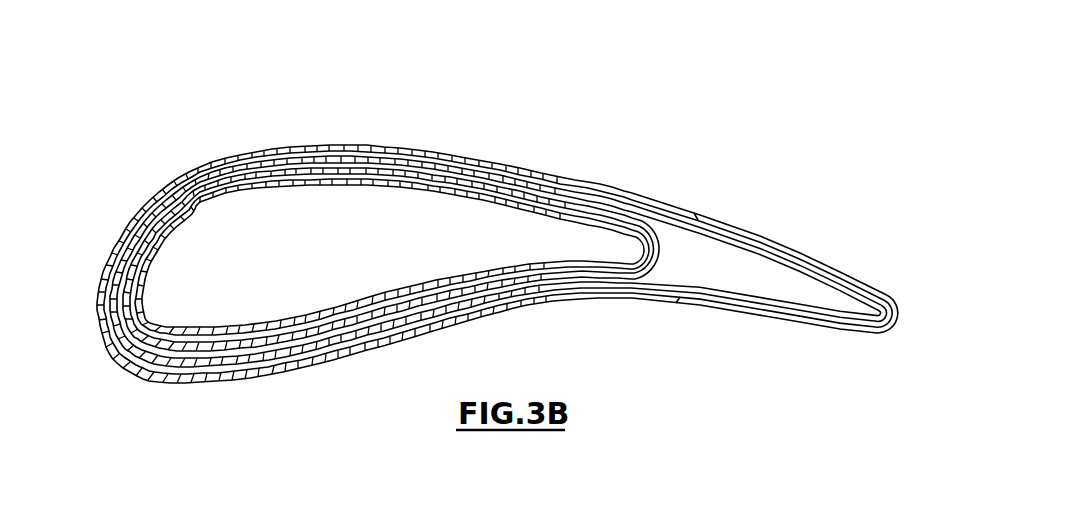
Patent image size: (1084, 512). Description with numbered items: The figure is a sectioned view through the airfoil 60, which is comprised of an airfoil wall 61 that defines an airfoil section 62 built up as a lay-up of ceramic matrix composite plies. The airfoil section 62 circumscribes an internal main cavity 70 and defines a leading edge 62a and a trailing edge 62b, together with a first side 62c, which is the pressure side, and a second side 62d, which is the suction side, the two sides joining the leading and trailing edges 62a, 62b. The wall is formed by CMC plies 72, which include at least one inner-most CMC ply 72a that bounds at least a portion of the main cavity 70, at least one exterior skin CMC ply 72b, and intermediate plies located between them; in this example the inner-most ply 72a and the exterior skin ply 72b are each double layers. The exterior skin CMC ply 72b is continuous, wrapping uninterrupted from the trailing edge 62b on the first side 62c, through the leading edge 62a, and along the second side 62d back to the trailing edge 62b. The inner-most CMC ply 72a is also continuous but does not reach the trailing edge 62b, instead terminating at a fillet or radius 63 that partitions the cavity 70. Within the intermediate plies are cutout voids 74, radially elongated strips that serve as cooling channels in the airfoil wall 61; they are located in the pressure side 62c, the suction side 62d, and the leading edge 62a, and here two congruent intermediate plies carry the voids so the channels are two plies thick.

The airfoil 60 is at (231, 422).
The airfoil wall 61 is at (160, 375).
The airfoil section 62 is at (620, 310).
The leading edge 62a is at (110, 346).
The trailing edge 62b is at (893, 294).
The first side 62c is at (354, 355).
The second side 62d is at (400, 148).
The fillet or radius 63 is at (677, 259).
The main cavity 70 is at (406, 211).
The CMC plies 72 is at (566, 212).
The inner-most CMC ply 72a is at (465, 195).
The exterior skin CMC ply 72b is at (327, 160).
The cutout voids 74 is at (320, 172).